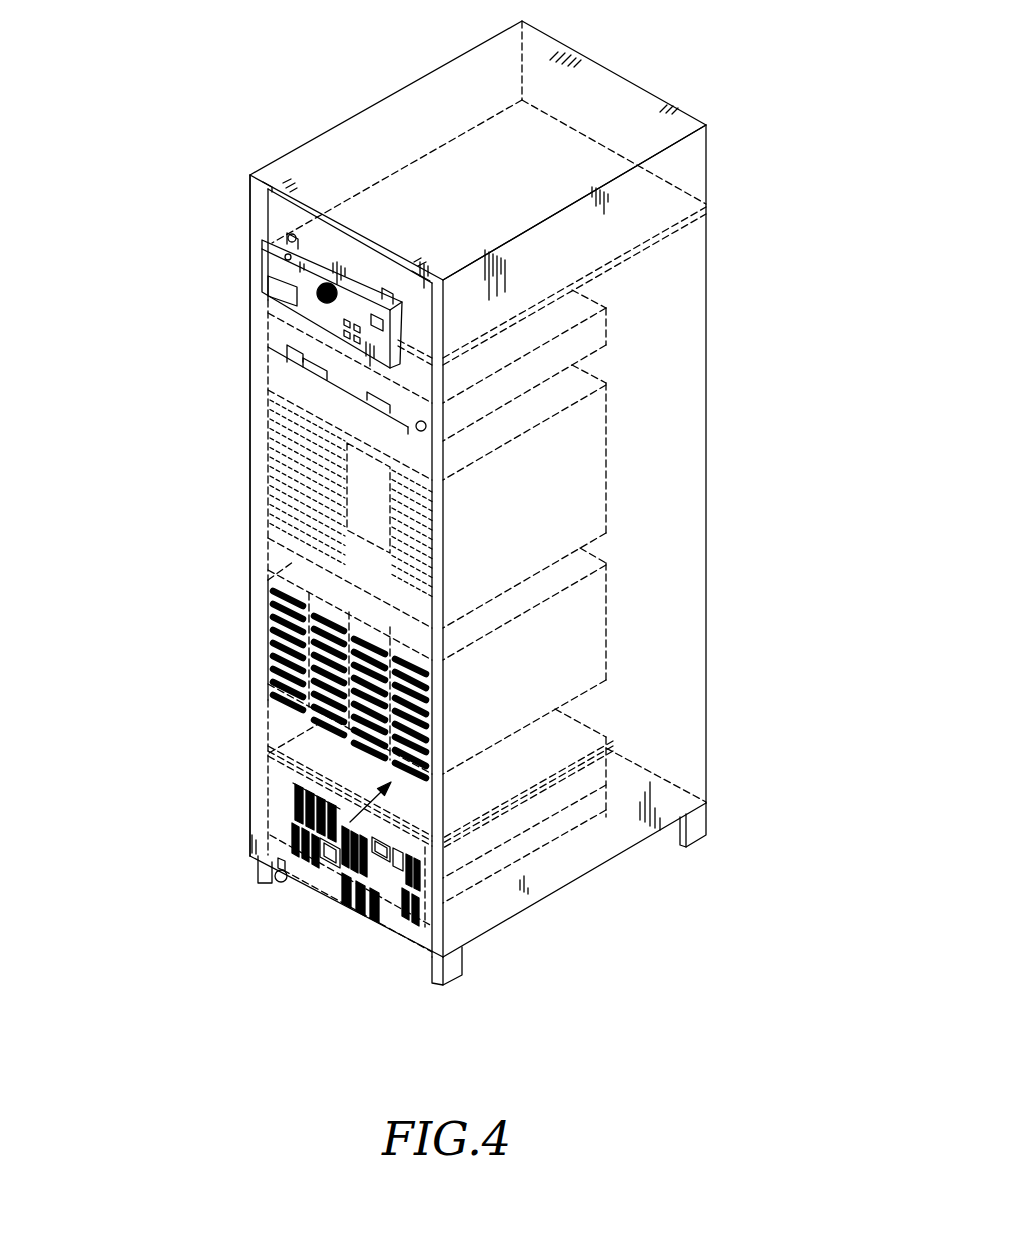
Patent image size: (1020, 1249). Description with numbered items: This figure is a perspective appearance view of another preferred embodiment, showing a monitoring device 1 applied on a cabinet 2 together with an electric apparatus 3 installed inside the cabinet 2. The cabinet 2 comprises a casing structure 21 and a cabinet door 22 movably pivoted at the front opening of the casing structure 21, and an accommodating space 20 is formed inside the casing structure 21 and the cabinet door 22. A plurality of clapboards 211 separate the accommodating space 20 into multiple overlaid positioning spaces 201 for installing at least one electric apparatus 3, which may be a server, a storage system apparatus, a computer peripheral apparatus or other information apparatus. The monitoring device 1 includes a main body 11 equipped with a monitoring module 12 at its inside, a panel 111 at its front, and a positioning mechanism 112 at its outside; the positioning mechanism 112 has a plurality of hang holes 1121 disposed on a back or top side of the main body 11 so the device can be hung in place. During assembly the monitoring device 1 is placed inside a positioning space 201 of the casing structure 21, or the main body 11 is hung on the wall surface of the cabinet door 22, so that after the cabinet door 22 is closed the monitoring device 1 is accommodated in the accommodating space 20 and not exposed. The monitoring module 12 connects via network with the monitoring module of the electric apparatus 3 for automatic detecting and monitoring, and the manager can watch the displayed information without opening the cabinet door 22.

The monitoring device 1 is at (176, 220).
The main body 11 is at (266, 239).
The panel 111 is at (265, 258).
The positioning mechanism 112 is at (281, 224).
The hang holes 1121 is at (292, 358).
The monitoring module 12 is at (251, 271).
The cabinet 2 is at (612, 40).
The accommodating space 20 is at (309, 869).
The positioning spaces 201 is at (607, 112).
The casing structure 21 is at (692, 247).
The clapboards 211 is at (672, 193).
The cabinet door 22 is at (248, 322).
The electric apparatus 3 is at (398, 882).